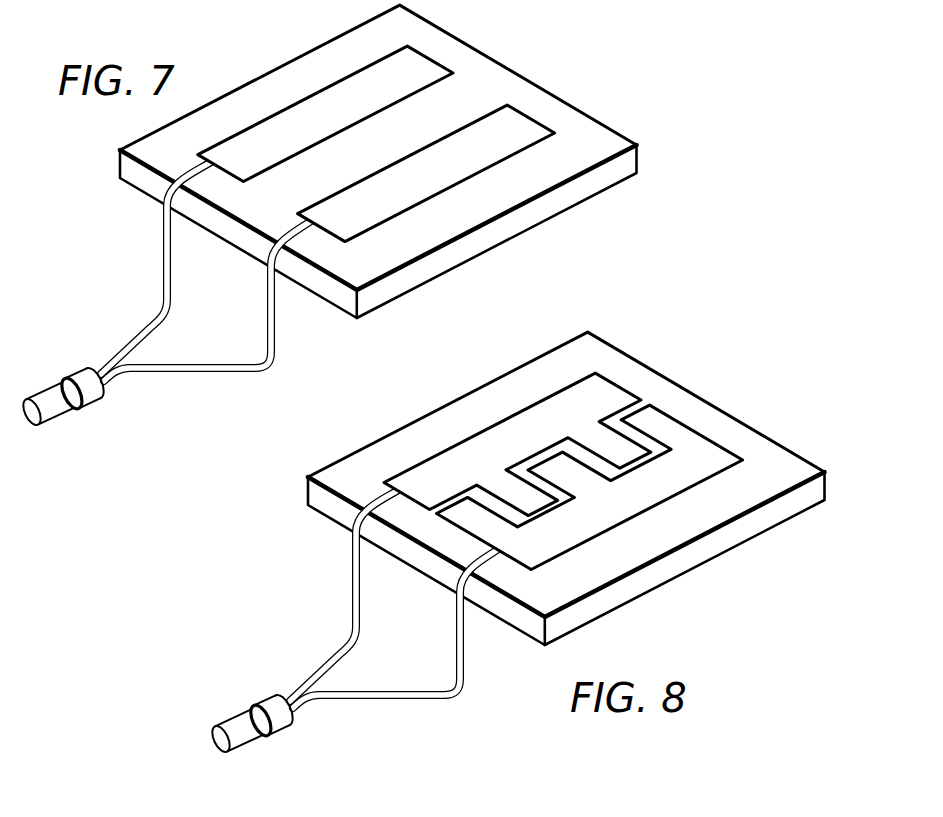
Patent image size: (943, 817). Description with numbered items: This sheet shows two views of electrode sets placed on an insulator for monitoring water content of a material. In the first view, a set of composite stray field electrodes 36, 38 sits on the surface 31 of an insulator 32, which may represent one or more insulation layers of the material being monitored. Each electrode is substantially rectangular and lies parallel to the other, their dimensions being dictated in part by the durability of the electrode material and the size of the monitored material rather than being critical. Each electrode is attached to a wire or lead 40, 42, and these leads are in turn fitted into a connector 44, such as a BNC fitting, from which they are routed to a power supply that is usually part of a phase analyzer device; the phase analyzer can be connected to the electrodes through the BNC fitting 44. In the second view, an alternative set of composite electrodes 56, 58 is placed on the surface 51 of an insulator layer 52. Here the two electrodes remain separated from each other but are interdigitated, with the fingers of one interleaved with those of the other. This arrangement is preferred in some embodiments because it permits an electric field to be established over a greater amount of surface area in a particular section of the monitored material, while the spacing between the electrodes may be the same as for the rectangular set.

In FIG. 7, the surface 31 is at (593, 152).
In FIG. 7, the insulator 32 is at (587, 180).
In FIG. 7, the composite stray field electrode 36 is at (505, 136).
In FIG. 7, the composite stray field electrode 38 is at (405, 78).
In FIG. 7, the wire or lead 40 is at (276, 323).
In FIG. 7, the wire or lead 42 is at (163, 272).
In FIG. 7, the connector 44 is at (58, 410).
In FIG. 8, the surface 51 is at (588, 353).
In FIG. 8, the insulator layer 52 is at (693, 550).
In FIG. 8, the composite electrode 56 is at (682, 447).
In FIG. 8, the composite electrode 58 is at (605, 398).